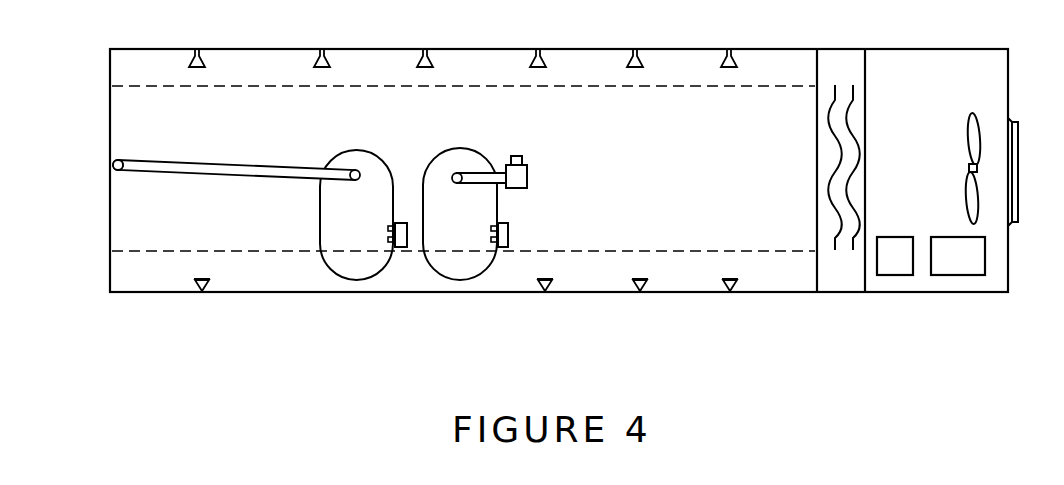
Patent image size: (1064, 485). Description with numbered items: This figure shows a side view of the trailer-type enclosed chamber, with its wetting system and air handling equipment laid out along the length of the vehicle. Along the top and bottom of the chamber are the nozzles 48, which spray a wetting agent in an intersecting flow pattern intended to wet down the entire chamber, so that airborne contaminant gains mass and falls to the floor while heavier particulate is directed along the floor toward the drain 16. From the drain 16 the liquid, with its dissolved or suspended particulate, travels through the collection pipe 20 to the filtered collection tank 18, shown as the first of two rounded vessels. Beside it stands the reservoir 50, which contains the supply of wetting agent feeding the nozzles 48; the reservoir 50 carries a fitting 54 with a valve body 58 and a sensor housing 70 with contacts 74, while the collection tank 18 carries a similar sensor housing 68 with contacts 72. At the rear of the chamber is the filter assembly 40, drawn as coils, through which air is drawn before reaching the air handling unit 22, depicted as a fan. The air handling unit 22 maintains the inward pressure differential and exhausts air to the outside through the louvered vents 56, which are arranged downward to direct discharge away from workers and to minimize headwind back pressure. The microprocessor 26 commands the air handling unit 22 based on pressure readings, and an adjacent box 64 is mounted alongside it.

The drain 16 is at (120, 170).
The filtered collection tank 18 is at (362, 275).
The collection pipe 20 is at (203, 162).
The air handling unit (AHU) 22 is at (968, 158).
The microprocessor 26 is at (977, 257).
The filter assembly 40 is at (841, 64).
The nozzles 48 is at (428, 56).
The reservoir 50 is at (461, 270).
The valve top 54 is at (516, 155).
The louvered vents 56 is at (1018, 131).
The valve body 58 is at (522, 188).
The box 64 is at (897, 270).
The sensor housing 68 is at (396, 222).
The sensor housing 70 is at (503, 248).
The sensor contacts 72 is at (389, 226).
The sensor contacts 74 is at (492, 226).